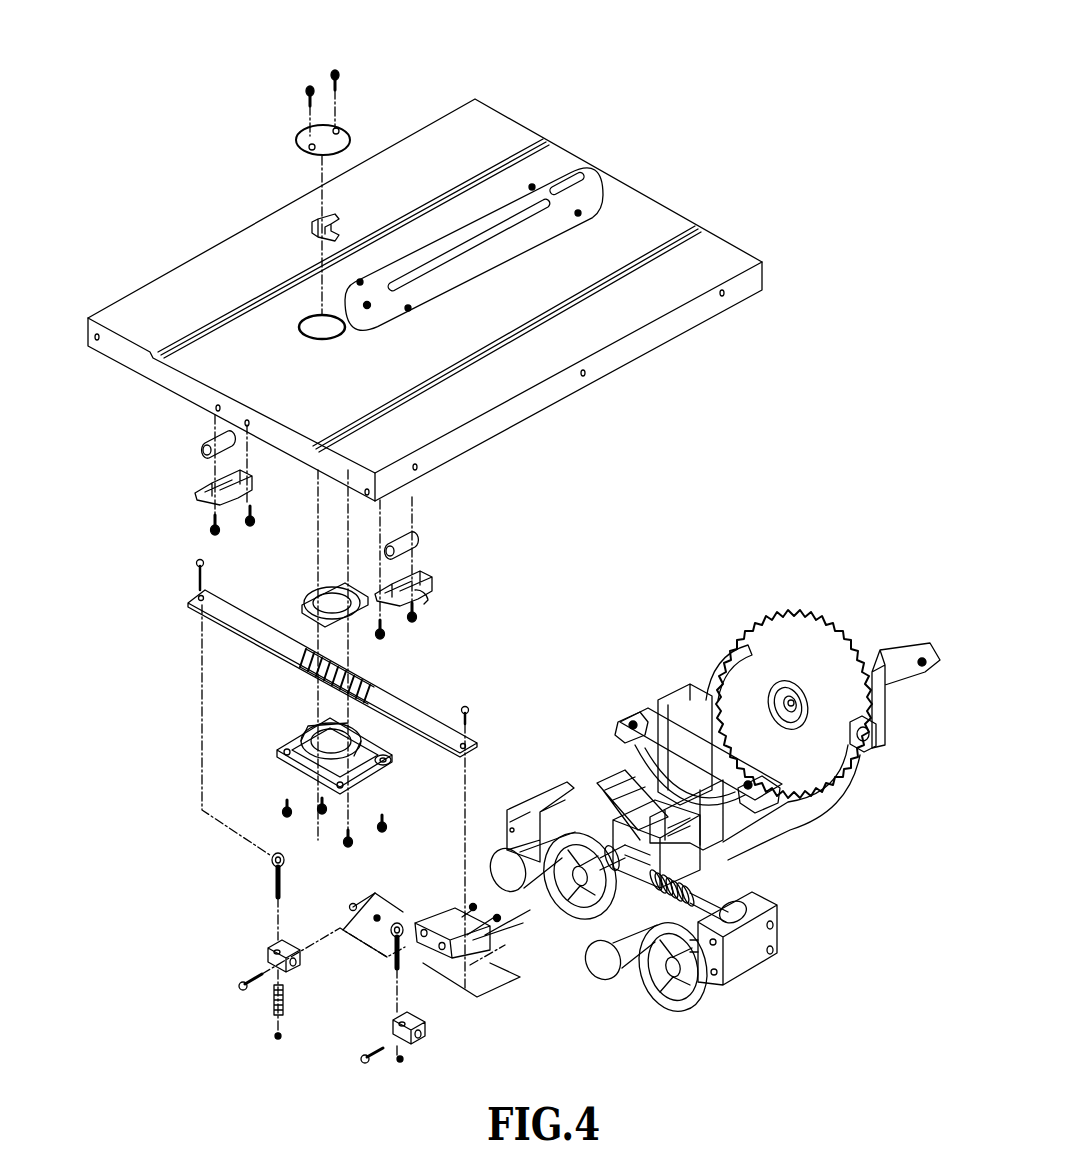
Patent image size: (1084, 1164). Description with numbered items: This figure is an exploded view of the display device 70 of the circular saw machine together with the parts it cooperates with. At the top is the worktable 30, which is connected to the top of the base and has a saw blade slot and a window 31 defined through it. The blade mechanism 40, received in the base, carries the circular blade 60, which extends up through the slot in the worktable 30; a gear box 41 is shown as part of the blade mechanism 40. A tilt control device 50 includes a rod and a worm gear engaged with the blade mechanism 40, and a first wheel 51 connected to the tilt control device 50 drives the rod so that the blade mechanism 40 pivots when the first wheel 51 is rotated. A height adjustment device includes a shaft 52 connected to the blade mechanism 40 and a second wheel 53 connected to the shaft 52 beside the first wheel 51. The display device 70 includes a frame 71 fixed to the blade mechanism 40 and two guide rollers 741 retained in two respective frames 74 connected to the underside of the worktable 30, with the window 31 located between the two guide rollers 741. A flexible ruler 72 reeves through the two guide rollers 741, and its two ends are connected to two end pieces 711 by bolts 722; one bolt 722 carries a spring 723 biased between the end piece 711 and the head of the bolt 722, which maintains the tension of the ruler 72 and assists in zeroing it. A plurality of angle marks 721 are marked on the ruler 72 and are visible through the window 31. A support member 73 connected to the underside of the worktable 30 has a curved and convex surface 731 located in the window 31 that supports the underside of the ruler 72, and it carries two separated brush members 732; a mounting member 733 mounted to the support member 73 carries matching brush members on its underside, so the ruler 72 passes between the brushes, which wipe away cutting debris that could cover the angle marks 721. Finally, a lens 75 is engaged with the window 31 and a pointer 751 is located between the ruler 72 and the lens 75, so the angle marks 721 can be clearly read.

The worktable 30 is at (517, 130).
The window 31 is at (320, 333).
The lens 75 is at (343, 133).
The pointer 751 is at (318, 228).
The display device 70 is at (163, 584).
The flexible ruler 72 is at (210, 608).
The angle marks 721 is at (380, 674).
The bolt 722 is at (275, 872).
The spring 723 is at (275, 1012).
The support member 73 is at (285, 757).
The convex surface 731 is at (388, 765).
The brush members 732 is at (322, 733).
The mounting member 733 is at (320, 599).
The frame 74 is at (435, 578).
The guide roller 741 is at (418, 543).
The frame 71 is at (452, 930).
The end piece 711 is at (418, 1040).
The blade mechanism 40 is at (820, 822).
The gear box 41 is at (745, 865).
The tilt control device 50 is at (748, 985).
The first wheel 51 is at (645, 1010).
The shaft 52 is at (635, 770).
The second wheel 53 is at (574, 918).
The circular blade 60 is at (792, 645).